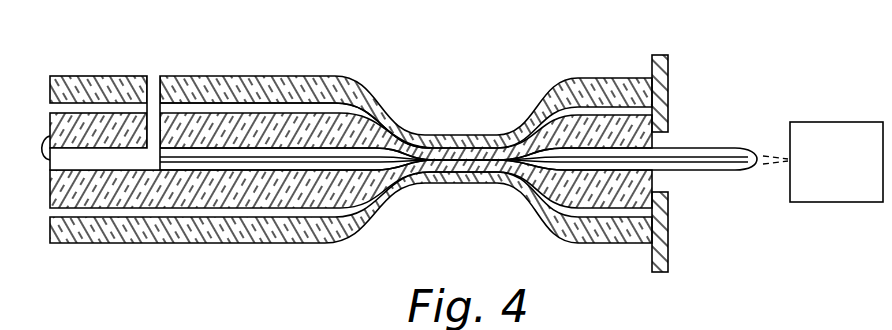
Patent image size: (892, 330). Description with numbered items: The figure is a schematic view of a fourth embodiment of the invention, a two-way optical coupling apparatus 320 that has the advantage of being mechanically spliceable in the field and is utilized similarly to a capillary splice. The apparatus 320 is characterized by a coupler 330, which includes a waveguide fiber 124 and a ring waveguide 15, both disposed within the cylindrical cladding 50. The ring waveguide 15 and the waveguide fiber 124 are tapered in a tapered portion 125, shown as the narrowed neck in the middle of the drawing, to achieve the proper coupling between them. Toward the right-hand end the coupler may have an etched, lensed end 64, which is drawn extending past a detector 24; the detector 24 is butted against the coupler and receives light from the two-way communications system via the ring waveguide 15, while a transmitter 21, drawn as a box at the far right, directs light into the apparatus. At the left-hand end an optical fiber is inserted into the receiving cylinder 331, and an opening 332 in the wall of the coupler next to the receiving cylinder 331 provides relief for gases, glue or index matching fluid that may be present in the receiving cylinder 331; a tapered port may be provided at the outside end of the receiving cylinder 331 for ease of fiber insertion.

The ring waveguide 15 is at (233, 108).
The transmitter 21 is at (835, 133).
The detector 24 is at (669, 68).
The cylindrical cladding 50 is at (614, 232).
The etched, lensed end 64 is at (714, 149).
The waveguide fiber 124 is at (262, 148).
The tapered portion 125 is at (461, 140).
The apparatus 320 is at (724, 61).
The coupler 330 is at (580, 83).
The receiving cylinder 331 is at (55, 128).
The slot 332 is at (152, 66).